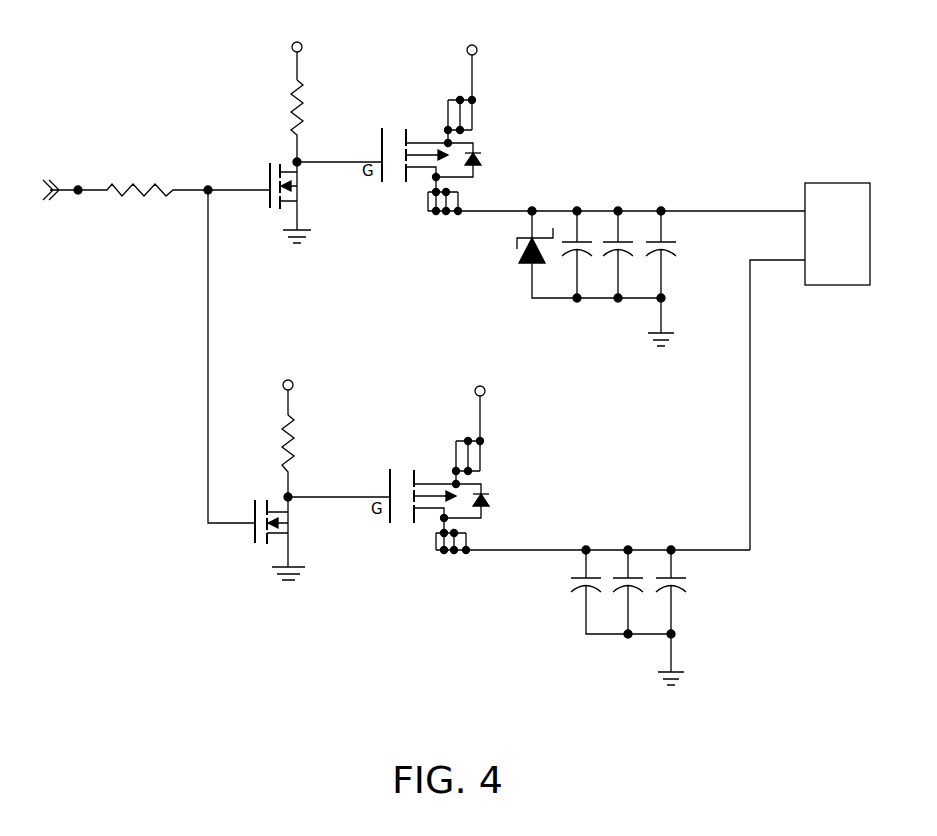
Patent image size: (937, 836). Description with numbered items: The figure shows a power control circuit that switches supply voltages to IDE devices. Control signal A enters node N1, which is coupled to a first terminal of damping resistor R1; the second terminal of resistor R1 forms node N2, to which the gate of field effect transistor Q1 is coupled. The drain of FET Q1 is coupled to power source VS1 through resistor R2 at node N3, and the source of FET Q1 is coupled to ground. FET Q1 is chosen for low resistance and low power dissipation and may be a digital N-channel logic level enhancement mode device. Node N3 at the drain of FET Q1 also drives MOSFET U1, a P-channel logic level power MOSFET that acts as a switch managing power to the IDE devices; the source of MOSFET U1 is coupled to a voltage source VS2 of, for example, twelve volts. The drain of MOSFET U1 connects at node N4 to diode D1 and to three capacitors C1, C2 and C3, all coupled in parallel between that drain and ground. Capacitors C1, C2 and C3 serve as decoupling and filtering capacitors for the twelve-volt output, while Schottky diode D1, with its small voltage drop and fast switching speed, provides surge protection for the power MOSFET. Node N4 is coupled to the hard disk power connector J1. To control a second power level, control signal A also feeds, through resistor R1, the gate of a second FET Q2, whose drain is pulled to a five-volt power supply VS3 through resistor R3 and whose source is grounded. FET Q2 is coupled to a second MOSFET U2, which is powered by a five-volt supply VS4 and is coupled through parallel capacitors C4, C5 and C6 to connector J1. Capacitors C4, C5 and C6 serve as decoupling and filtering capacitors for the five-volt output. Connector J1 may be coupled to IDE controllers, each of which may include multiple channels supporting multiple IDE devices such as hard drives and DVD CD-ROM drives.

The control signal A is at (56, 210).
The node N1 is at (82, 178).
The node N2 is at (233, 342).
The node N3 is at (337, 151).
The node N4 is at (666, 200).
The damping resistor R1 is at (143, 206).
The resistor R2 is at (310, 121).
The resistor R3 is at (304, 456).
The field effect transistor Q1 is at (294, 202).
The field effect transistor Q2 is at (315, 536).
The MOSFET U1 is at (457, 156).
The MOSFET U2 is at (570, 496).
The Schottky diode D1 is at (589, 254).
The capacitor C1 is at (585, 256).
The capacitor C2 is at (626, 256).
The capacitor C3 is at (669, 278).
The capacitor C4 is at (621, 590).
The capacitor C5 is at (634, 592).
The capacitor C6 is at (678, 615).
The connector J1 is at (819, 357).
The power source VS1 is at (297, 50).
The voltage source VS2 is at (472, 62).
The power supply VS3 is at (288, 387).
The power supply VS4 is at (480, 403).